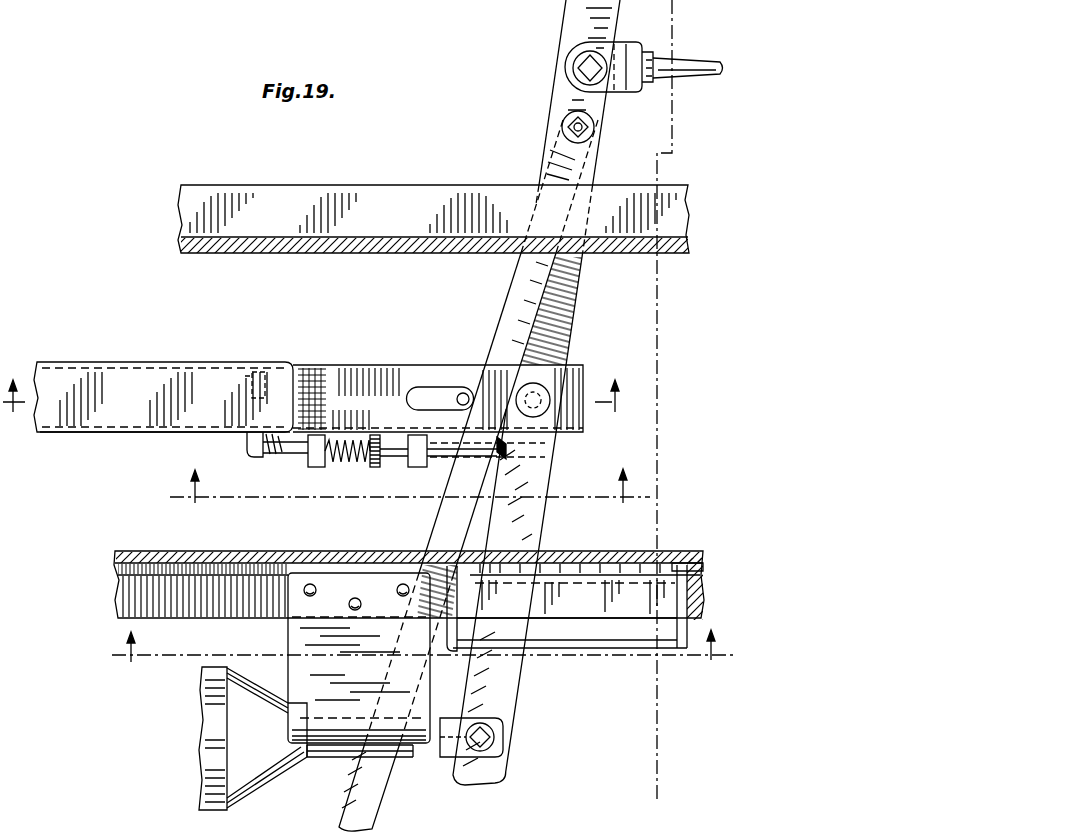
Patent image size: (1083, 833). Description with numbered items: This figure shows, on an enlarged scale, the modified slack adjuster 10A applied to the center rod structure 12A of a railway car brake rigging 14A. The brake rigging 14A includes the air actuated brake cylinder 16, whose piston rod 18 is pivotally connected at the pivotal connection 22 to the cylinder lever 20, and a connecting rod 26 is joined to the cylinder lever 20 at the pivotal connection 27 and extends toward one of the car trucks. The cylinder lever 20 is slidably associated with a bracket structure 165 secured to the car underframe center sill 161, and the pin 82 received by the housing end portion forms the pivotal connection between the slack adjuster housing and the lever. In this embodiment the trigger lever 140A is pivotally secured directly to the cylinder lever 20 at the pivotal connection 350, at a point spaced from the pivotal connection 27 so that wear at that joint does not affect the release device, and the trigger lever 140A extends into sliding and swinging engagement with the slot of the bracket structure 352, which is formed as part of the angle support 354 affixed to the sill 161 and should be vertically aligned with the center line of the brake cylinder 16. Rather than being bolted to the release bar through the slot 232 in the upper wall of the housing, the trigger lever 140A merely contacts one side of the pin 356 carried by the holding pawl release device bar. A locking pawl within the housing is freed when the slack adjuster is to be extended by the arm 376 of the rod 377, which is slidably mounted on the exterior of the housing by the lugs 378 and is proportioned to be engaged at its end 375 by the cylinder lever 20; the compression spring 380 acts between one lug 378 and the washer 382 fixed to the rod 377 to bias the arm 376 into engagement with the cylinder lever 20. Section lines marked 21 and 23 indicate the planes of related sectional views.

The slack adjuster 10A is at (155, 441).
The center rod structure 12A is at (226, 352).
The brake rigging 14A is at (530, 118).
The brake cylinder 16 is at (192, 756).
The piston rod 18 is at (386, 787).
The cylinder lever 20 is at (554, 540).
The section line 21 is at (642, 788).
The pivotal connection 22 is at (405, 500).
The section line 23 is at (326, 415).
The connecting rod 26 is at (702, 62).
The pivotal connection 27 is at (580, 62).
The pin 82 is at (540, 392).
The trigger lever 140A is at (512, 318).
The center sill 161 is at (130, 592).
The bracket structure 165 is at (684, 582).
The slot 232 is at (438, 386).
The pivotal connection 350 is at (596, 128).
The bracket structure 352 is at (358, 745).
The angle support 354 is at (305, 634).
The pin 356 is at (468, 392).
The end of rod 375 is at (548, 455).
The arm 376 is at (247, 441).
The rod 377 is at (385, 457).
The lugs 378 is at (312, 457).
The compression spring 380 is at (345, 458).
The washer 382 is at (375, 435).